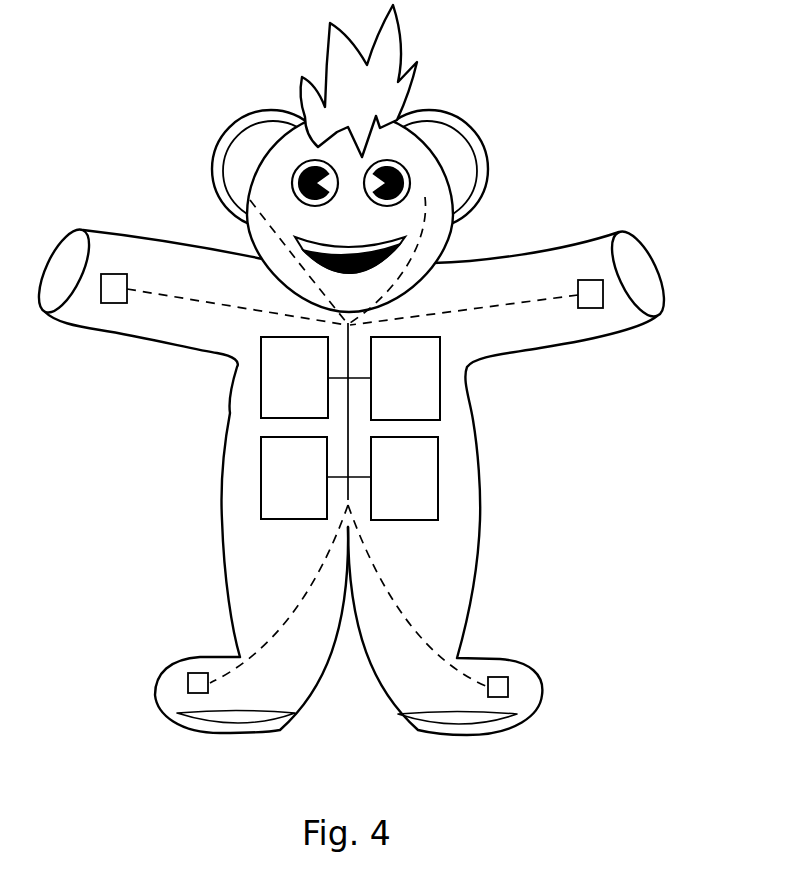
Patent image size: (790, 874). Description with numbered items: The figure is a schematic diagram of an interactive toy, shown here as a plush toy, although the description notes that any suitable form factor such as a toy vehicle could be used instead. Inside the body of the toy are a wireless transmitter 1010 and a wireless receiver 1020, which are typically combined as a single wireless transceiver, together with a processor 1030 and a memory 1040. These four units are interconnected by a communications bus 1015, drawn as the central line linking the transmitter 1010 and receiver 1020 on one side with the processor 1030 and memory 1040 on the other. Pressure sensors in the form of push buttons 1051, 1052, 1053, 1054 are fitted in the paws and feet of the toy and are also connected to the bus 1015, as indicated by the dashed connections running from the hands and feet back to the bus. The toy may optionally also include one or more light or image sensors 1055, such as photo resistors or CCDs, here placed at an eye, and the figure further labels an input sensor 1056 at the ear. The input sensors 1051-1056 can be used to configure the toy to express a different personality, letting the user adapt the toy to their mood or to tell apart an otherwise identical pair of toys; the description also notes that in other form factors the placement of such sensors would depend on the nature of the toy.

The wireless transmitter 1010 is at (260, 400).
The communications bus 1015 is at (347, 423).
The wireless receiver 1020 is at (259, 493).
The processor 1030 is at (440, 378).
The memory 1040 is at (438, 475).
The push button 1051 is at (592, 278).
The push button 1052 is at (505, 677).
The push button 1053 is at (190, 673).
The push button 1054 is at (113, 274).
The light or image sensor 1055 is at (412, 186).
The input sensor 1056 is at (232, 128).